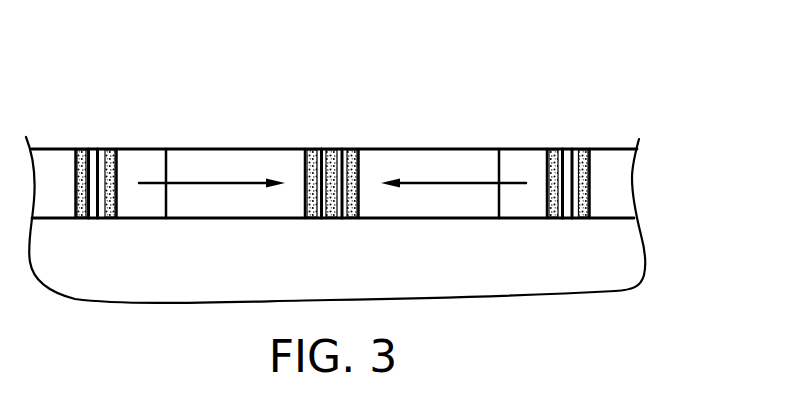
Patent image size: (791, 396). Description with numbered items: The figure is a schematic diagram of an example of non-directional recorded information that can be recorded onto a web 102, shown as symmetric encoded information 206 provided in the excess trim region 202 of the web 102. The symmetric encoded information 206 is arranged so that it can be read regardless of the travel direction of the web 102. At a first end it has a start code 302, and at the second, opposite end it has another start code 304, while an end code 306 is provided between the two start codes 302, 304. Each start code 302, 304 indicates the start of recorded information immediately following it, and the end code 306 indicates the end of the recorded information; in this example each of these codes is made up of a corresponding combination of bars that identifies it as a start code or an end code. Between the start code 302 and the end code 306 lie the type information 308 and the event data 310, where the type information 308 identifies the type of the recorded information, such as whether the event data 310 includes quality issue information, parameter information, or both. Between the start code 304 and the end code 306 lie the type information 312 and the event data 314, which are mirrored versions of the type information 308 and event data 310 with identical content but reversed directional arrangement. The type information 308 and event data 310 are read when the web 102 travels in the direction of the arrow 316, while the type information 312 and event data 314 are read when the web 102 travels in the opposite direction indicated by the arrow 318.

The web 102 is at (632, 265).
The excess trim region 202 is at (623, 182).
The symmetric encoded information 206 is at (75, 87).
The start code 302 is at (75, 146).
The start code 304 is at (546, 146).
The end code 306 is at (304, 146).
The type information 308 is at (115, 225).
The event data 310 is at (306, 225).
The type information 312 is at (498, 225).
The event data 314 is at (356, 225).
The arrow 316 is at (206, 180).
The arrow 318 is at (459, 180).